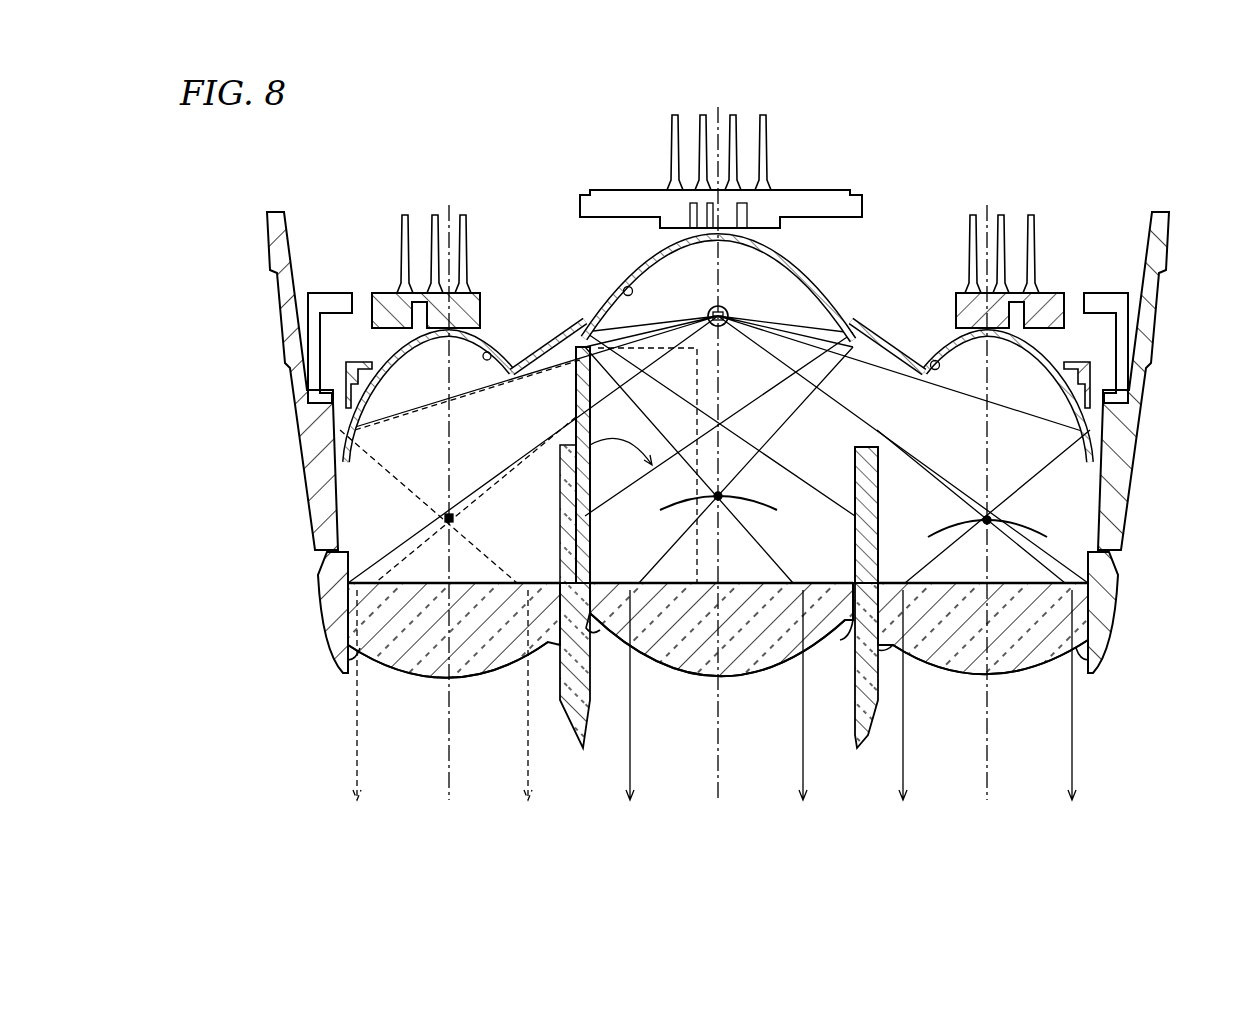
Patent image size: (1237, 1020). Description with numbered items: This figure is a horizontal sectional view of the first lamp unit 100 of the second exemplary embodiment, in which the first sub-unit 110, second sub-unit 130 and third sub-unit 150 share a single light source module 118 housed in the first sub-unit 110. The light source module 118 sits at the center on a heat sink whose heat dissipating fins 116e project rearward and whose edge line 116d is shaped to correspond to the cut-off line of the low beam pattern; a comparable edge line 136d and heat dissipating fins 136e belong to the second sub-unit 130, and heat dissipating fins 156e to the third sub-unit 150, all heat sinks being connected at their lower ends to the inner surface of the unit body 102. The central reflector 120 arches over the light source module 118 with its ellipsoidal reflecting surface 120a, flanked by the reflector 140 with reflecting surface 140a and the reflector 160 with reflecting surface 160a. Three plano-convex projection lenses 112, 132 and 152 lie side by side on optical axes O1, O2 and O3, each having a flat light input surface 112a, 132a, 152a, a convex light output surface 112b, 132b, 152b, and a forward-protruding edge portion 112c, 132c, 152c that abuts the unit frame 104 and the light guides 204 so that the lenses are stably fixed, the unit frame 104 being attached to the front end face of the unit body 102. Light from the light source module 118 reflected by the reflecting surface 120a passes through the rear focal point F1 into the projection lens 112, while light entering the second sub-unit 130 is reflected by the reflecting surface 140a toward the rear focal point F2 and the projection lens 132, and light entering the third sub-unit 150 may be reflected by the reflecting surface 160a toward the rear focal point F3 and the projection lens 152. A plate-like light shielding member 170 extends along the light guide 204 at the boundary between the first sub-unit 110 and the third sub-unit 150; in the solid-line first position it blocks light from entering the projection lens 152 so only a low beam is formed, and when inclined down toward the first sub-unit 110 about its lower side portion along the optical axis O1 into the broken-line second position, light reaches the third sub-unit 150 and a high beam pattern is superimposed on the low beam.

The first lamp unit 100 is at (201, 462).
The unit body 102 is at (277, 323).
The unit frame 104 is at (320, 610).
The first sub-unit 110 is at (722, 89).
The projection lens 112 is at (752, 680).
The light input surface 112a is at (646, 578).
The light output surface 112b is at (660, 677).
The edge portion 112c is at (606, 625).
The edge line 116d is at (758, 506).
The heat dissipating fins 116e is at (768, 146).
The light source module 118 is at (723, 306).
The reflector 120 is at (640, 266).
The reflecting surface 120a is at (624, 289).
The second sub-unit 130 is at (1014, 185).
The projection lens 132 is at (948, 678).
The light input surface 132a is at (912, 560).
The light output surface 132b is at (1042, 672).
The edge portion 132c is at (880, 735).
The edge line 136d is at (930, 537).
The heat dissipating fins 136e is at (1038, 236).
The reflector 140 is at (947, 333).
The reflecting surface 140a is at (925, 358).
The third sub-unit 150 is at (435, 182).
The projection lens 152 is at (488, 680).
The light input surface 152a is at (542, 578).
The light output surface 152b is at (392, 676).
The edge portion 152c is at (345, 682).
The heat dissipating fins 156e is at (468, 242).
The reflector 160 is at (490, 352).
The reflecting surface 160a is at (516, 355).
The light shielding member 170 is at (707, 423).
The light guide 204 is at (586, 752).
The rear focal point F1 is at (722, 493).
The rear focal point F2 is at (992, 518).
The rear focal point F3 is at (457, 520).
The optical axis O1 is at (718, 783).
The optical axis O2 is at (985, 785).
The optical axis O3 is at (447, 782).